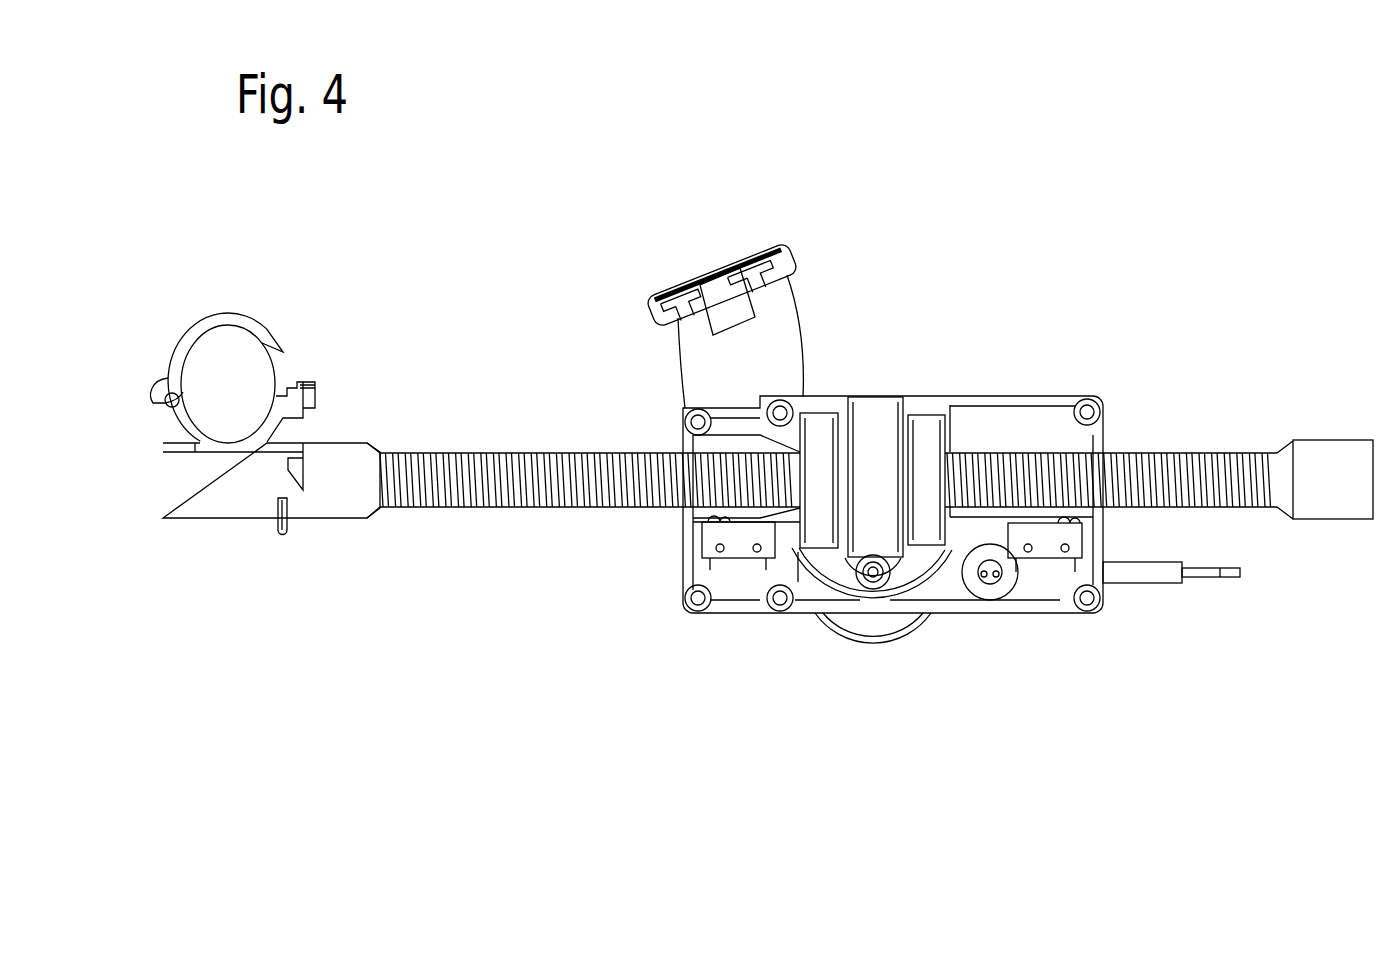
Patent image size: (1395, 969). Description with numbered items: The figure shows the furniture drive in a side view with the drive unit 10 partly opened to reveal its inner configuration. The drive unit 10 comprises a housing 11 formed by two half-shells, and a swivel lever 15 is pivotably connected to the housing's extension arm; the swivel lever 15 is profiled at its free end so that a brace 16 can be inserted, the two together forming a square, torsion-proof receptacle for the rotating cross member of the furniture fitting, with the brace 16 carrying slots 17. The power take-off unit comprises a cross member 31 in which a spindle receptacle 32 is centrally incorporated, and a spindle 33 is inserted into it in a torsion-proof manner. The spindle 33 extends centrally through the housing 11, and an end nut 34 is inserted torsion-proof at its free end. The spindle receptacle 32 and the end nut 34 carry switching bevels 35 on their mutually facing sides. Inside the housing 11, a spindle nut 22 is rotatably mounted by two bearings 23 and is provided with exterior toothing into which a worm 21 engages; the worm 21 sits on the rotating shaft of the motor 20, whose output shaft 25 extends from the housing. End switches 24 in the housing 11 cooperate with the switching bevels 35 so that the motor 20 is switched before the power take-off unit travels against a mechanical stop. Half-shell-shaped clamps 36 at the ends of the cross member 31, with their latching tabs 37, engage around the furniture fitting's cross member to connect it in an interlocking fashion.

The drive unit 10 is at (1083, 317).
The housing 11 is at (742, 614).
The swivel lever 15 is at (782, 333).
The brace 16 is at (765, 255).
The slot 17 is at (725, 292).
The motor 20 is at (903, 632).
The worm 21 is at (870, 580).
The spindle nut 22 is at (870, 418).
The bearing 23 is at (822, 428).
The end switch 24 is at (720, 548).
The output shaft 25 is at (1212, 572).
The cross member 31 is at (188, 483).
The spindle receptacle 32 is at (325, 508).
The spindle 33 is at (503, 490).
The end nut 34 is at (1332, 457).
The switching bevel 35 is at (368, 442).
The clamp 36 is at (170, 362).
The clip tab 37 is at (308, 382).